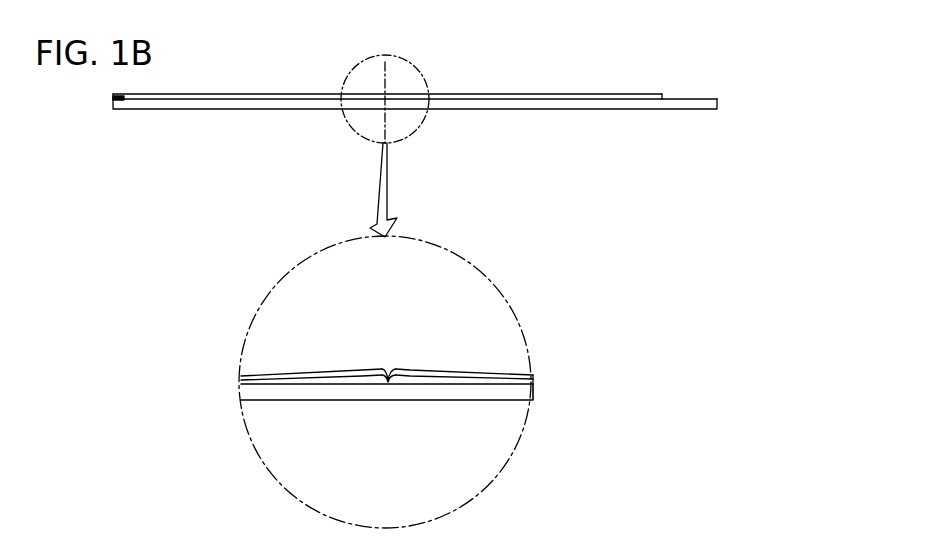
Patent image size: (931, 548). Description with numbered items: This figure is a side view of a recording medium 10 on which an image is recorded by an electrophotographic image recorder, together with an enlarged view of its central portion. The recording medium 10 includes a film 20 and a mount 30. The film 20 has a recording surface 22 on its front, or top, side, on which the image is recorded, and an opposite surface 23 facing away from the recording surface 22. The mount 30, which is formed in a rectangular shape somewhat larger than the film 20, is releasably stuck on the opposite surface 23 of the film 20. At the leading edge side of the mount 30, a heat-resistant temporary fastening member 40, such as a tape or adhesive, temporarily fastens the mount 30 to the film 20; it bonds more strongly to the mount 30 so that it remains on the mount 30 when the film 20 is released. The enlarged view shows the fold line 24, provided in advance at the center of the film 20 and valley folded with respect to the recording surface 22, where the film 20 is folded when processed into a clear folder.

The recording medium 10 is at (703, 53).
The film 20 is at (636, 94).
The recording surface 22 is at (538, 93).
The opposite surface 23 is at (541, 100).
The fold line 24 is at (385, 94).
The mount 30 is at (666, 110).
The temporary fastening member 40 is at (118, 103).